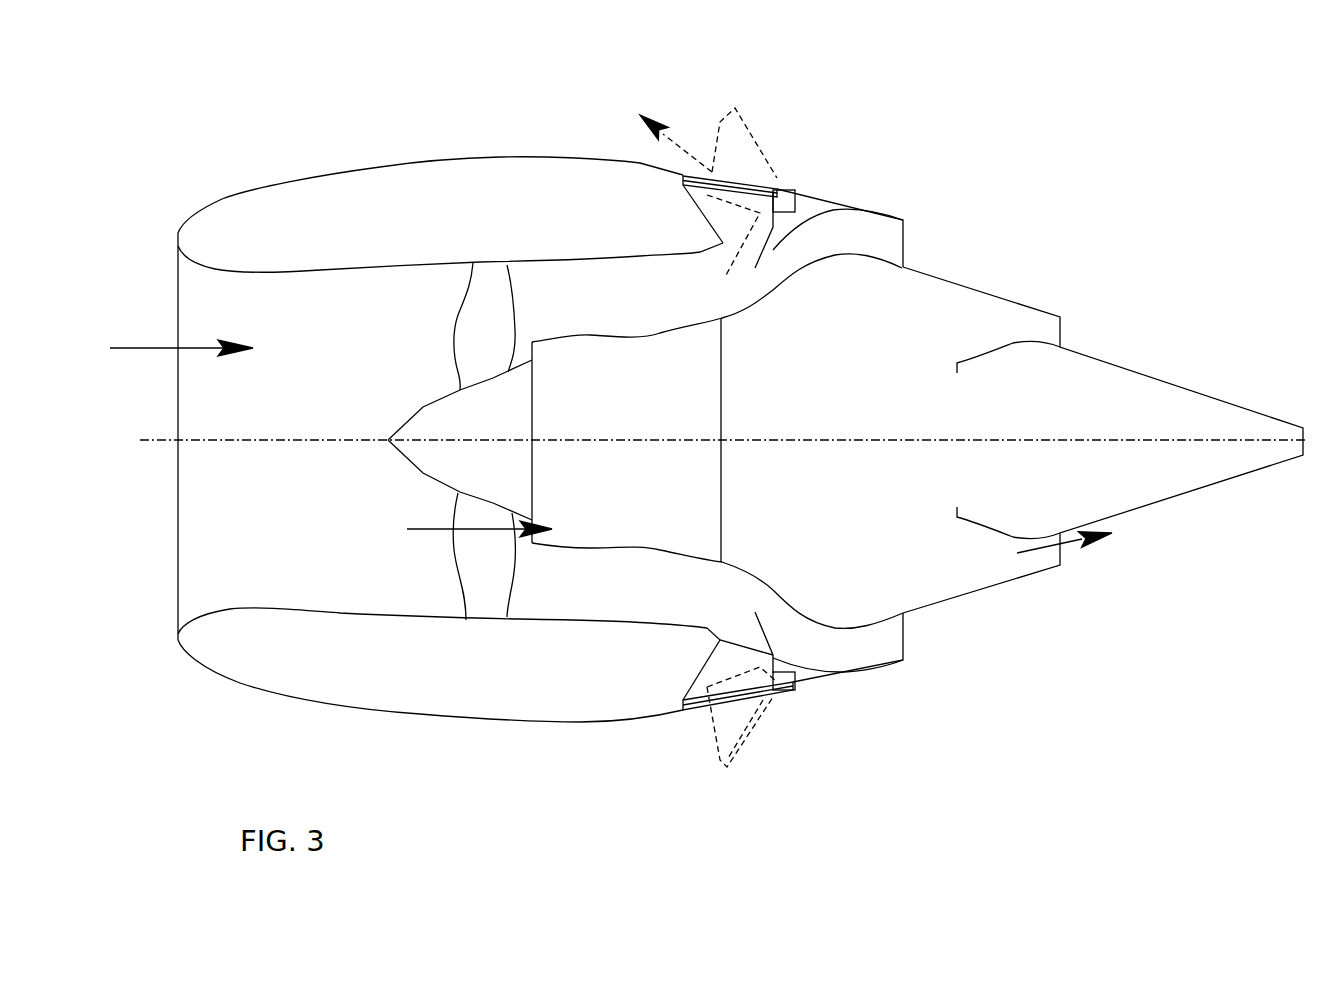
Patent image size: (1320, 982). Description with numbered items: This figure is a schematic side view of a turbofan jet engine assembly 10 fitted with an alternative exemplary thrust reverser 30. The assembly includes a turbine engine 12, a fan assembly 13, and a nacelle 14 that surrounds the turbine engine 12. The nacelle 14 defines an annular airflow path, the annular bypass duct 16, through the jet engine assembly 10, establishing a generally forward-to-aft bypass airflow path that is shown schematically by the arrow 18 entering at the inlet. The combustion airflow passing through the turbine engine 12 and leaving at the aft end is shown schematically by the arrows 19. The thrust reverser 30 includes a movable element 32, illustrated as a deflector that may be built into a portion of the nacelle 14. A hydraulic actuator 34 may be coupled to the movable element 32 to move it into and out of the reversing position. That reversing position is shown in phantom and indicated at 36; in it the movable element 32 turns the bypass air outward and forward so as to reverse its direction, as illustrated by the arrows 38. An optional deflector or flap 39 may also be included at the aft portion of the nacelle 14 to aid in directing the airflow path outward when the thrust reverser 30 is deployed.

The turbofan jet engine assembly 10 is at (205, 179).
The turbine engine 12 is at (617, 372).
The fan assembly 13 is at (480, 283).
The nacelle 14 is at (302, 182).
The annular bypass duct 16 is at (552, 290).
The bypass airflow arrow 18 is at (160, 346).
The combustion airflow arrows 19 is at (480, 533).
The thrust reverser 30 is at (777, 182).
The movable element 32 is at (740, 176).
The hydraulic actuator 34 is at (810, 195).
The reversing position 36 is at (712, 172).
The reversed airflow arrows 38 is at (690, 140).
The deflector or flap 39 is at (723, 243).